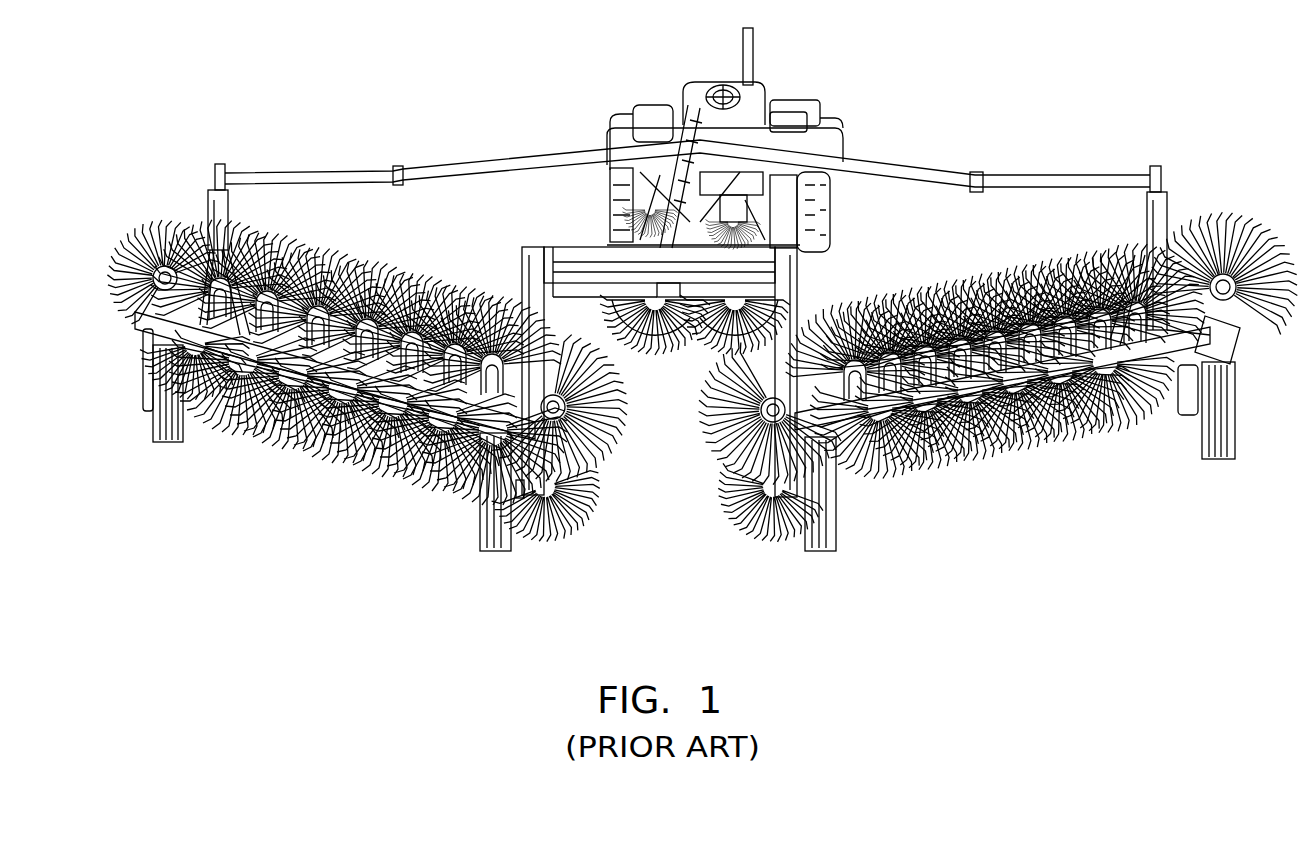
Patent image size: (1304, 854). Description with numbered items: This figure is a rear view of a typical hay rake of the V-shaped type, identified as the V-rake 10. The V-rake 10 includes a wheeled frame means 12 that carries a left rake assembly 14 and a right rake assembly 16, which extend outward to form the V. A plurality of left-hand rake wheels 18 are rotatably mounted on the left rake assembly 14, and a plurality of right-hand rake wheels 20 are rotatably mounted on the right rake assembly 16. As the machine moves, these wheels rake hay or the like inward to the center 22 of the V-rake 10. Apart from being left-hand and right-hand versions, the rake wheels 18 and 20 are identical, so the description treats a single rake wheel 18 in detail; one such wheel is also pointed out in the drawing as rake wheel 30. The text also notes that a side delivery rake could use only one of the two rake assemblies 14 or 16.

The V-rake 10 is at (1040, 143).
The wheeled frame means 12 is at (531, 248).
The left rake assembly 14 is at (394, 270).
The right rake assembly 16 is at (935, 272).
The left-hand rake wheels 18 is at (347, 400).
The right-hand rake wheels 20 is at (990, 440).
The center 22 is at (674, 503).
The rotary hoe wheel 30 is at (440, 280).